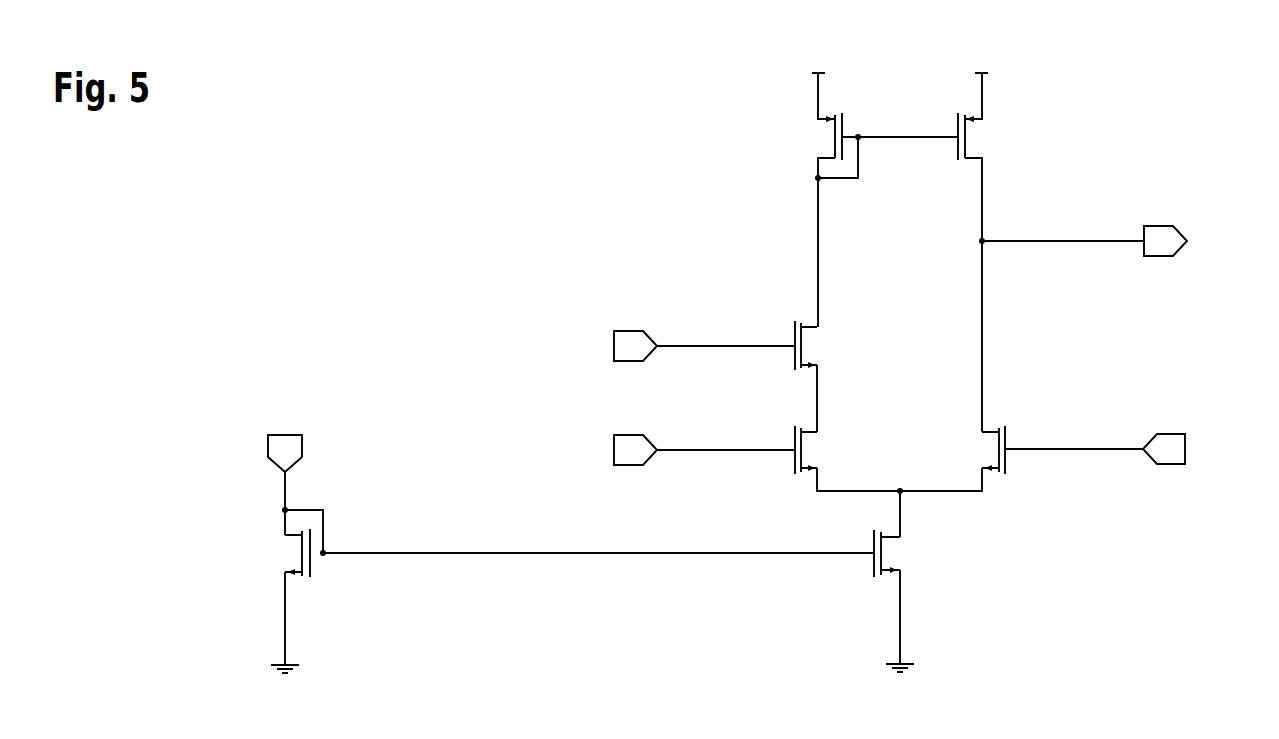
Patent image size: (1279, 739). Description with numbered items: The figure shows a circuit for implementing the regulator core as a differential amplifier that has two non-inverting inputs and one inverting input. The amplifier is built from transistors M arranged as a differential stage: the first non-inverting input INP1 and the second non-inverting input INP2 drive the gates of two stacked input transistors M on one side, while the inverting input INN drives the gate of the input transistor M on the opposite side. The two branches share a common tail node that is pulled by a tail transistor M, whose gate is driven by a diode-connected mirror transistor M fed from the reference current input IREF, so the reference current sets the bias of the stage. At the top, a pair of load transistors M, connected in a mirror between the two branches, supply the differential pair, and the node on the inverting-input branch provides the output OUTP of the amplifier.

The transistor M is at (652, 345).
The reference current input IREF is at (286, 437).
The second non-inverting input INP2 is at (677, 346).
The first non-inverting input INP1 is at (677, 450).
The output OUTP is at (1116, 241).
The inverting input INN is at (1117, 449).